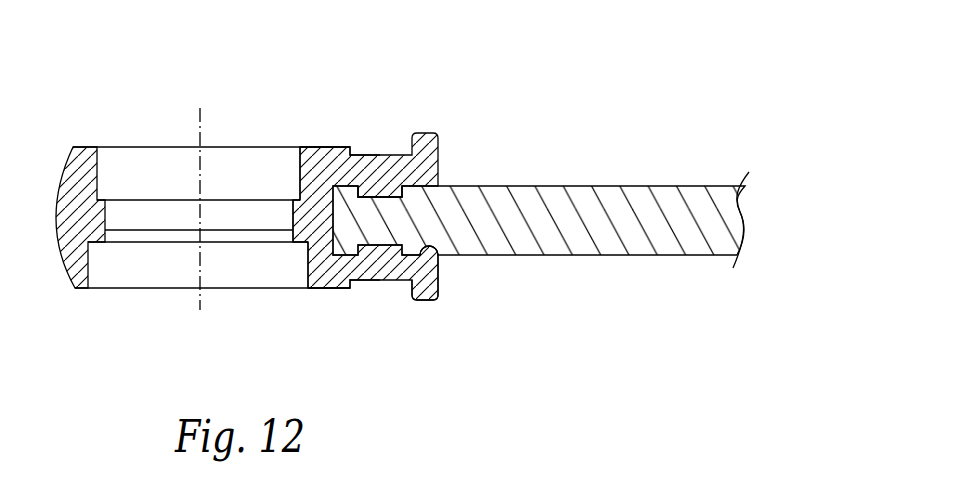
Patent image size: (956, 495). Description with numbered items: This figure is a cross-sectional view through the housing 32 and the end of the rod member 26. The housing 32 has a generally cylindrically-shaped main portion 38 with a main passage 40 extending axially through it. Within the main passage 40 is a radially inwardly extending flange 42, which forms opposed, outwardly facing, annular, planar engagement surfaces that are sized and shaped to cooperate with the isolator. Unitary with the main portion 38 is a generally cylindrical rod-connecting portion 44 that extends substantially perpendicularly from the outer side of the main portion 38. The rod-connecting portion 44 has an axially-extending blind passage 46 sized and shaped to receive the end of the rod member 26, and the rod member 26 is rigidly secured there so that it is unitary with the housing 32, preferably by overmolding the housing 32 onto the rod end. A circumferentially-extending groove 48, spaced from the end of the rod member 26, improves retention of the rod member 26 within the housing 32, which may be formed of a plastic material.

The rod member 26 is at (592, 186).
The housing 32 is at (401, 193).
The main portion 38 is at (310, 147).
The main passage 40 is at (311, 260).
The flange 42 is at (97, 243).
The rod-connecting portion 44 is at (382, 281).
The blind passage 46 is at (438, 243).
The groove 48 is at (368, 198).